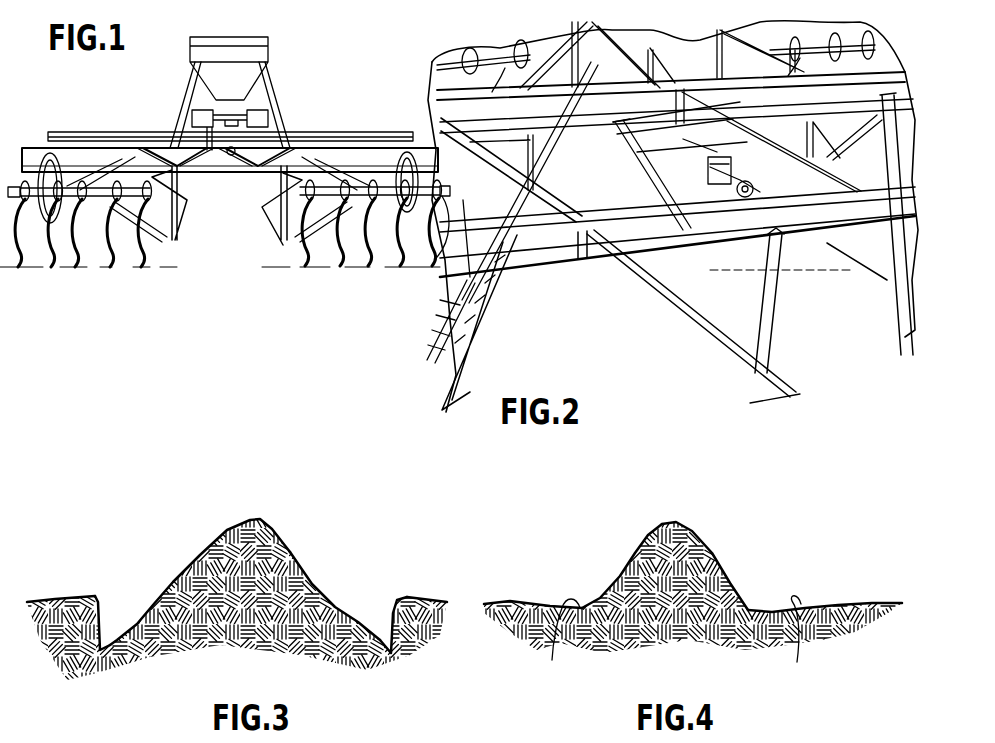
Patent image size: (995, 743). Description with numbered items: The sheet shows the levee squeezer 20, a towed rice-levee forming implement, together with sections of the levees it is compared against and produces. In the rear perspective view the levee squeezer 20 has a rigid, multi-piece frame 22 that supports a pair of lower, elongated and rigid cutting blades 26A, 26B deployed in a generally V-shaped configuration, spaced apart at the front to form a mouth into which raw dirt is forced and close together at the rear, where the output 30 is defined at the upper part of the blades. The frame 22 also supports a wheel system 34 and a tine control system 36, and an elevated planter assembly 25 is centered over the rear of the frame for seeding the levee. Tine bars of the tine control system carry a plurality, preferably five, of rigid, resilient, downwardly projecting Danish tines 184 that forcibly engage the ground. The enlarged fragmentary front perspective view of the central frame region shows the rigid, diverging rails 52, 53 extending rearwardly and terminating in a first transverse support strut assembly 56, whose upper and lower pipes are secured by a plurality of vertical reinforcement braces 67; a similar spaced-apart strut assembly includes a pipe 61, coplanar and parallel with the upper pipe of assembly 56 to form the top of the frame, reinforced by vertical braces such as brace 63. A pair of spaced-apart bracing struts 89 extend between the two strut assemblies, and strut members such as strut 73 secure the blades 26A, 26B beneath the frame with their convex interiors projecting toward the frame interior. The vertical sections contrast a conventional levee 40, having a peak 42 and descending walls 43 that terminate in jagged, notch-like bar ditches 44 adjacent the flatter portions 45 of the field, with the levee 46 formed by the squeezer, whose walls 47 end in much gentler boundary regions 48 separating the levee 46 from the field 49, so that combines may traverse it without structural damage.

In FIG. 1, the levee squeezer 20 is at (322, 84).
In FIG. 2, the levee squeezer 20 is at (853, 42).
In FIG. 1, the frame 22 is at (135, 128).
In FIG. 2, the frame 22 is at (544, 287).
In FIG. 1, the planter assembly 25 is at (212, 76).
In FIG. 1, the cutting blade 26A is at (162, 238).
In FIG. 2, the cutting blade 26A is at (872, 252).
In FIG. 1, the cutting blade 26B is at (296, 224).
In FIG. 2, the cutting blade 26B is at (448, 398).
In FIG. 1, the output mouth 30 is at (240, 234).
In FIG. 1, the wheel system 34 is at (36, 219).
In FIG. 1, the tine control system 36 is at (353, 226).
In FIG. 2, the tine control system 36 is at (516, 45).
In FIG. 1, the Danish tines 184 is at (112, 255).
In FIG. 2, the frame rail 52 is at (684, 322).
In FIG. 2, the frame rail 53 is at (905, 308).
In FIG. 2, the first transverse support strut assembly 56 is at (606, 72).
In FIG. 2, the pipe 61 is at (483, 228).
In FIG. 2, the vertical brace 63 is at (578, 243).
In FIG. 2, the vertical reinforcement brace 67 is at (672, 103).
In FIG. 2, the strut member 73 is at (836, 150).
In FIG. 2, the bracing strut 89 is at (650, 180).
In FIG. 3, the conventional levee 40 is at (237, 595).
In FIG. 3, the peak 42 is at (252, 516).
In FIG. 3, the descending walls 43 is at (322, 600).
In FIG. 3, the bar ditches 44 is at (101, 648).
In FIG. 3, the flatter portions of the field 45 is at (43, 602).
In FIG. 4, the levee 46 is at (693, 603).
In FIG. 4, the walls 47 is at (615, 588).
In FIG. 4, the boundary regions 48 is at (671, 640).
In FIG. 4, the field 49 is at (885, 603).